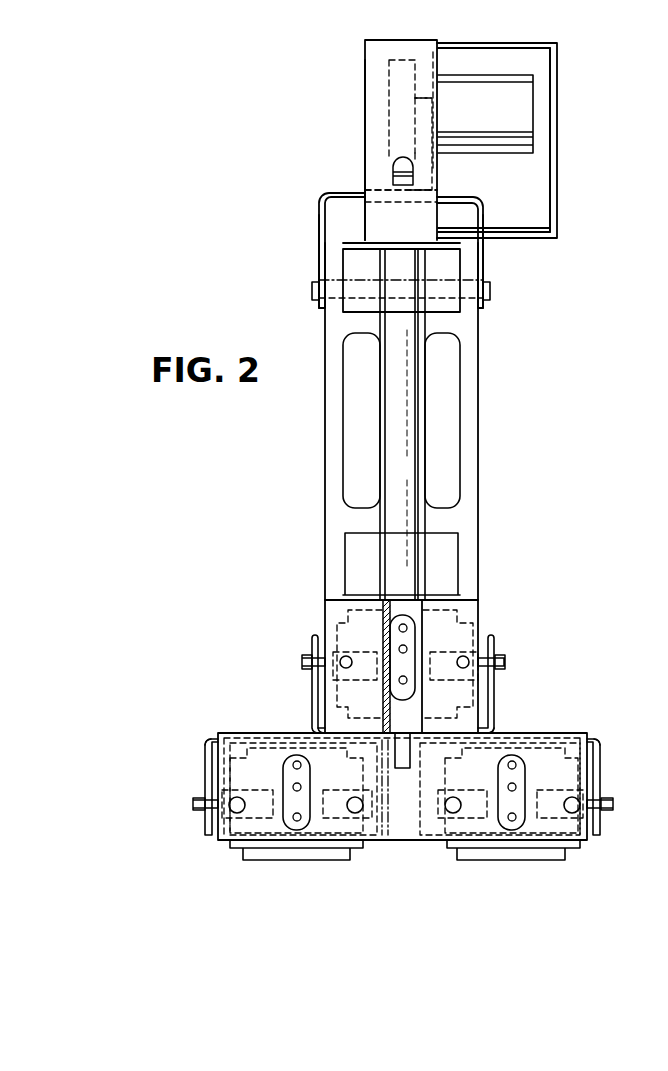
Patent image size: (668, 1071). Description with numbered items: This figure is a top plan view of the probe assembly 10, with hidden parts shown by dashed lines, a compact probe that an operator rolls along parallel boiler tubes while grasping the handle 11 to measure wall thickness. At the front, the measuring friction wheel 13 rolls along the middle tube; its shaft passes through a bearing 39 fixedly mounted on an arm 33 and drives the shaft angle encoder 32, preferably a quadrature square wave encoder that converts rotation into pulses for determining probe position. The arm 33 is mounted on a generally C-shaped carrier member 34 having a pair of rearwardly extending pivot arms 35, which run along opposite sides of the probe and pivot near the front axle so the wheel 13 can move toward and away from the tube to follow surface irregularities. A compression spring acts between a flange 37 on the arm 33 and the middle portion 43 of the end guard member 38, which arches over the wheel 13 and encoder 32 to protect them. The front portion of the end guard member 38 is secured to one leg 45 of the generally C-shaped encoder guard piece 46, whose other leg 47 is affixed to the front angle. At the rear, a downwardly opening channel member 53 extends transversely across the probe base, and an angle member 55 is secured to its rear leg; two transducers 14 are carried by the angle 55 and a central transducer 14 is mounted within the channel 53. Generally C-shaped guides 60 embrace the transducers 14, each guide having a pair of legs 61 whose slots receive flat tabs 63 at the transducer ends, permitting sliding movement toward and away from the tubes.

The probe assembly 10 is at (497, 450).
The handle 11 is at (417, 443).
The measuring friction wheel 13 is at (388, 138).
The transducers 14 is at (470, 627).
The shaft angle encoder 32 is at (500, 158).
The arm 33 is at (438, 175).
The carrier member 34 is at (345, 197).
The pivot arms 35 is at (319, 226).
The flange 37 is at (393, 165).
The end guard member 38 is at (375, 83).
The bearing 39 is at (424, 96).
The middle portion 43 is at (365, 110).
The leg 45 is at (517, 43).
The encoder guard piece 46 is at (557, 182).
The leg 47 is at (524, 228).
The channel member 53 is at (325, 610).
The angle member 55 is at (265, 733).
The guides 60 is at (495, 729).
The legs 61 is at (312, 685).
The flat tabs 63 is at (303, 660).